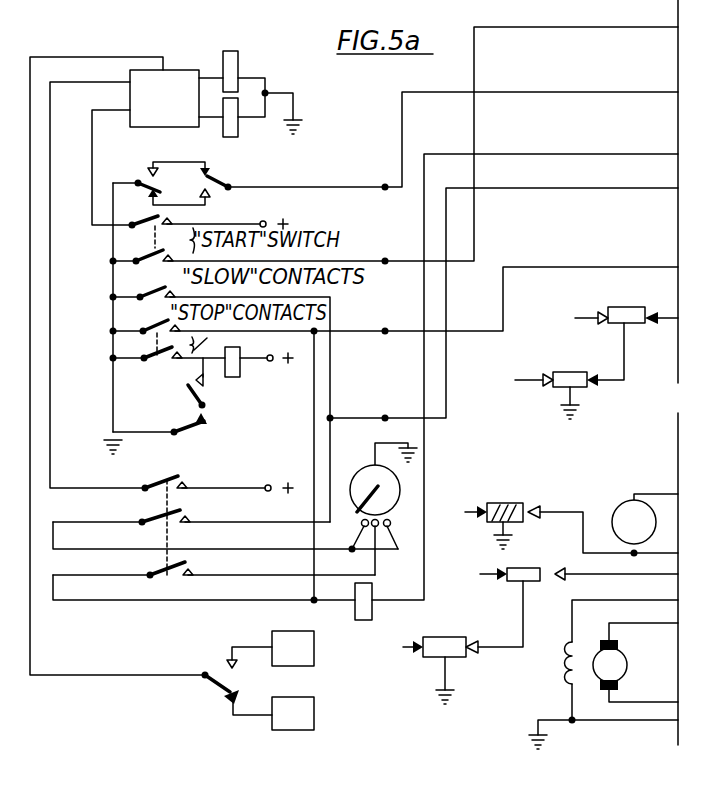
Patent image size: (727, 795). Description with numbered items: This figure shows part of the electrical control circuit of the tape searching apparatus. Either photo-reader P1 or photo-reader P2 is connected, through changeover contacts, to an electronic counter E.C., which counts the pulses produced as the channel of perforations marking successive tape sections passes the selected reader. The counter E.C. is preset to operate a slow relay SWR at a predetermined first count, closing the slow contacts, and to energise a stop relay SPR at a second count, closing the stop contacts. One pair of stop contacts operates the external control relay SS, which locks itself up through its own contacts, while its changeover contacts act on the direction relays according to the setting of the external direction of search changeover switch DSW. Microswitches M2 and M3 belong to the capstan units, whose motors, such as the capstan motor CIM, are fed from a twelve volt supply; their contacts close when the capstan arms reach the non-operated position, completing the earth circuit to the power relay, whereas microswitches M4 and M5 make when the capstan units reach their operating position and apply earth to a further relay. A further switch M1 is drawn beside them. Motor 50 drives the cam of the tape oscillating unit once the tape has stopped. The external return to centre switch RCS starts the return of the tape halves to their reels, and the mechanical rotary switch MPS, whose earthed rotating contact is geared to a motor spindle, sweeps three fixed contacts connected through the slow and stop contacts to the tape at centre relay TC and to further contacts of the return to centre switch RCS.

The electronic counter E.C. is at (164, 98).
The slow relay SWR is at (253, 72).
The stop relay SPR is at (249, 116).
The direction of search changeover switch DSW is at (223, 174).
The external control relay SS is at (235, 372).
The return to centre switch RCS is at (214, 515).
The mechanical rotary switch MPS is at (383, 509).
The tape at centre relay TC is at (379, 606).
The photo-reader P1 is at (273, 713).
The photo-reader P2 is at (270, 649).
The motor relay 1 M1 is at (571, 528).
The microswitch M2 is at (626, 330).
The microswitch M3 is at (556, 383).
The microswitch M4 is at (578, 595).
The microswitch M5 is at (440, 657).
The motor 50 is at (645, 525).
The capstan motor CIM is at (603, 674).